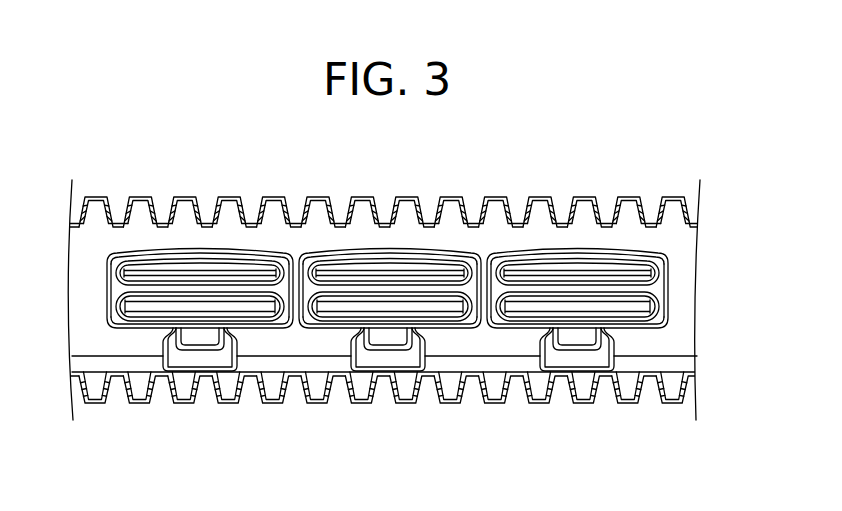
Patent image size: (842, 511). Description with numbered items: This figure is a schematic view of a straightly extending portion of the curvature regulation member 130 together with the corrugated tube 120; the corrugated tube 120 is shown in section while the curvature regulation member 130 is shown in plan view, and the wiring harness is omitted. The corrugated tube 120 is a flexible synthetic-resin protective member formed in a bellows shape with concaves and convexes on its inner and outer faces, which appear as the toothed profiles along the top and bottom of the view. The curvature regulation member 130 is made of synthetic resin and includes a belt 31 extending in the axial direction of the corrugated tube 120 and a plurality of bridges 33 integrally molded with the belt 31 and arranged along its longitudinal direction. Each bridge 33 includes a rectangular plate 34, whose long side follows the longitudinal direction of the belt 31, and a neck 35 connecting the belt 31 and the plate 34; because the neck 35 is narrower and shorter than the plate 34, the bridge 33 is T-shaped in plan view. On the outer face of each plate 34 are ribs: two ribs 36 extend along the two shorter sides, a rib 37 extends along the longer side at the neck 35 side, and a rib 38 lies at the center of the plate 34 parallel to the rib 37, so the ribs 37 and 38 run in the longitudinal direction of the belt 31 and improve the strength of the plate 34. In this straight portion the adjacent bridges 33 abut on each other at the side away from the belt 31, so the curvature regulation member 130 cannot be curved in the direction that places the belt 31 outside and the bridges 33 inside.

The belt 31 is at (493, 363).
The bridge 33 is at (500, 250).
The plate 34 is at (383, 252).
The neck 35 is at (386, 360).
The rib 36 is at (305, 287).
The rib 37 is at (335, 330).
The rib 38 is at (340, 286).
The corrugated tube 120 is at (138, 196).
The curvature regulation member 130 is at (641, 248).